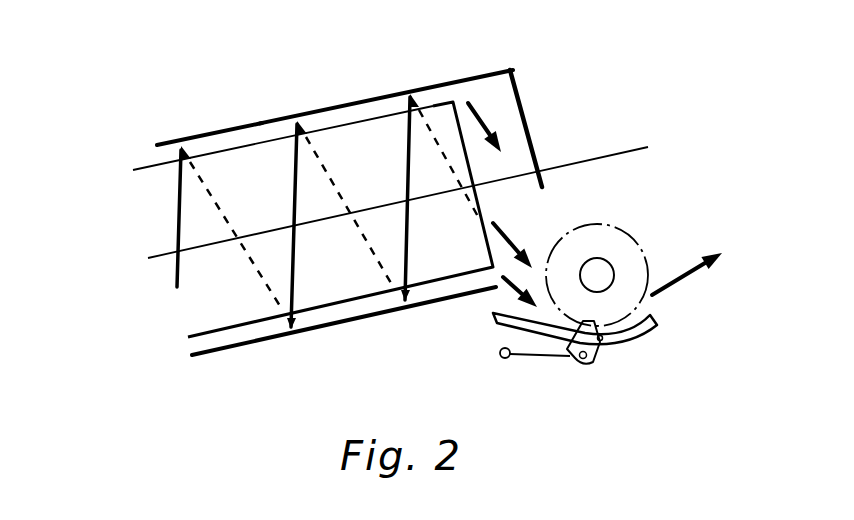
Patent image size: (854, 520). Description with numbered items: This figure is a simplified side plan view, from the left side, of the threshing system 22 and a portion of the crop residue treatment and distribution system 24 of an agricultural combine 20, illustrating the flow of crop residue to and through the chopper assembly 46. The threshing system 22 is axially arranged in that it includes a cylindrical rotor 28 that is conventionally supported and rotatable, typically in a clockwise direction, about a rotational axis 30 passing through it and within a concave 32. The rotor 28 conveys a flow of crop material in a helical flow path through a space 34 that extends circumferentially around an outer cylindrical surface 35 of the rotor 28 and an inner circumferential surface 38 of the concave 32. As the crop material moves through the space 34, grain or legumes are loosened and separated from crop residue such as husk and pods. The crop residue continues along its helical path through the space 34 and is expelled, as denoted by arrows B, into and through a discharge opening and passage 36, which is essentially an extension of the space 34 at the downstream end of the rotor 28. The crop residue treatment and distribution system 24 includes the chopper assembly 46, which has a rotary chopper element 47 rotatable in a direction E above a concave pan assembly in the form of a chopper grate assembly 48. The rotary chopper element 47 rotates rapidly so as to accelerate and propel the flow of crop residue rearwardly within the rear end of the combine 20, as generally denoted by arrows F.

The agricultural combine 20 is at (594, 87).
The threshing system 22 is at (520, 82).
The crop residue treatment and distribution system 24 is at (693, 187).
The cylindrical rotor 28 is at (432, 104).
The rotational axis 30 is at (158, 253).
The concave 32 is at (198, 132).
The space 34 is at (348, 112).
The outer cylindrical surface 35 is at (253, 147).
The discharge opening and passage 36 is at (503, 158).
The inner circumferential surface 38 is at (214, 350).
The chopper assembly 46 is at (655, 302).
The rotary chopper element 47 is at (617, 272).
The chopper grate assembly 48 is at (497, 333).
The arrows B is at (480, 108).
The direction E is at (607, 212).
The arrows F is at (698, 272).